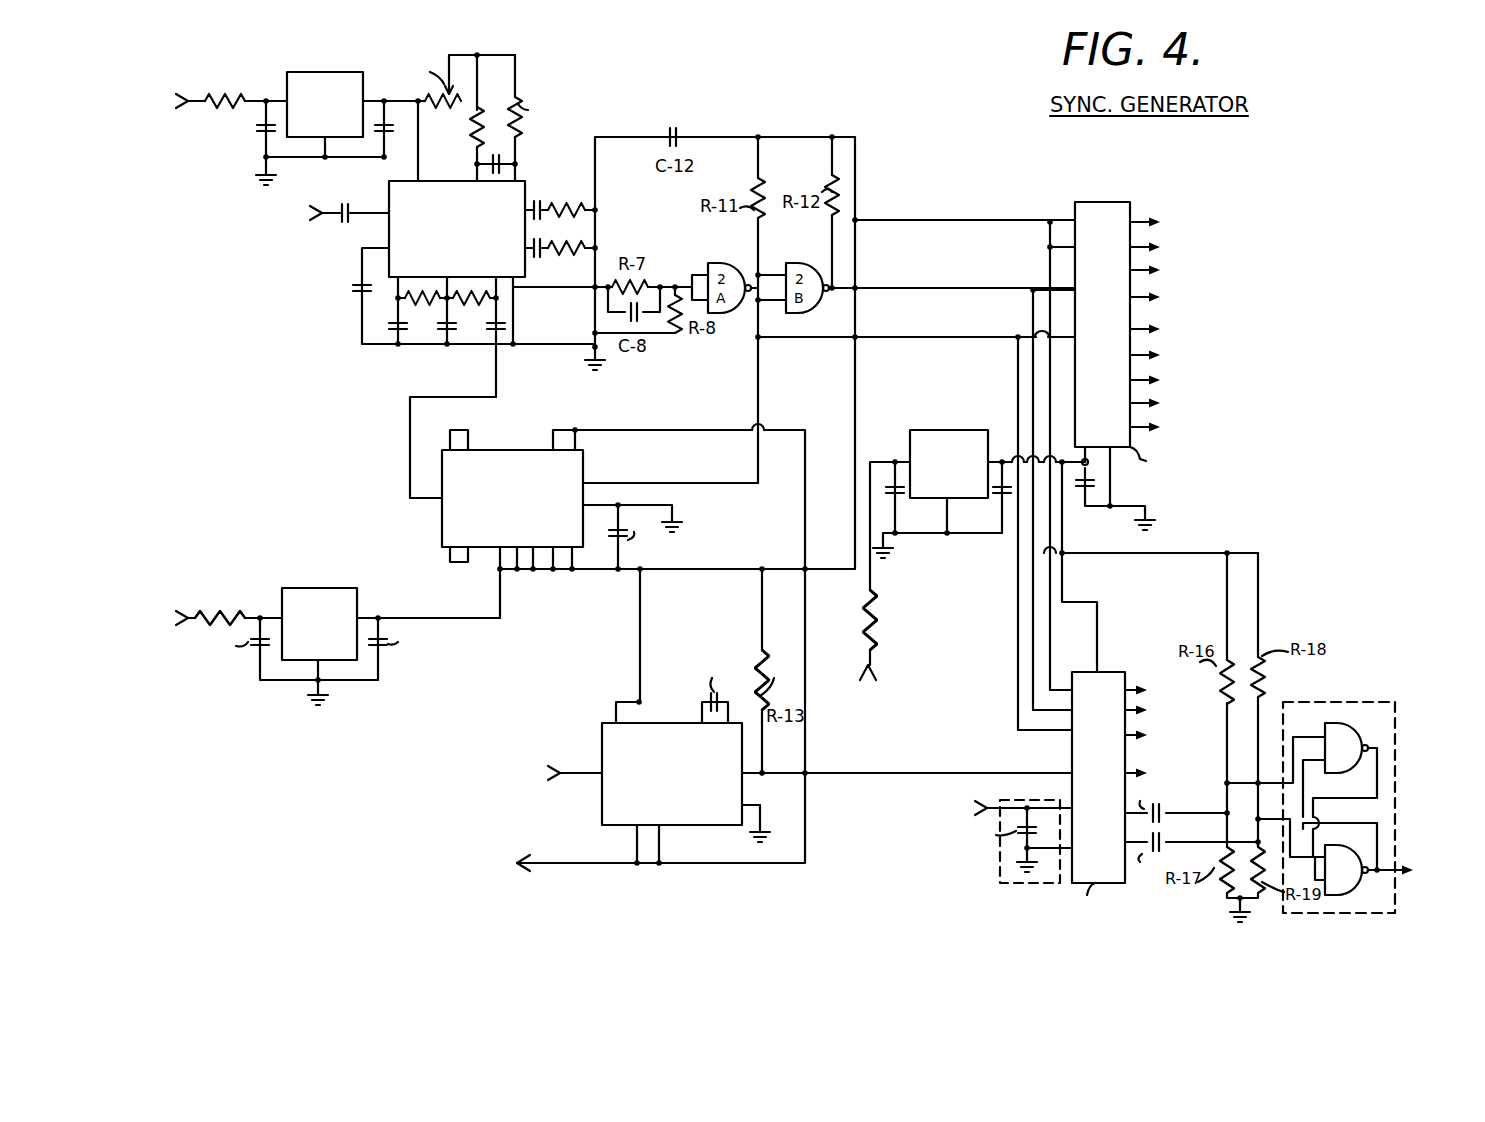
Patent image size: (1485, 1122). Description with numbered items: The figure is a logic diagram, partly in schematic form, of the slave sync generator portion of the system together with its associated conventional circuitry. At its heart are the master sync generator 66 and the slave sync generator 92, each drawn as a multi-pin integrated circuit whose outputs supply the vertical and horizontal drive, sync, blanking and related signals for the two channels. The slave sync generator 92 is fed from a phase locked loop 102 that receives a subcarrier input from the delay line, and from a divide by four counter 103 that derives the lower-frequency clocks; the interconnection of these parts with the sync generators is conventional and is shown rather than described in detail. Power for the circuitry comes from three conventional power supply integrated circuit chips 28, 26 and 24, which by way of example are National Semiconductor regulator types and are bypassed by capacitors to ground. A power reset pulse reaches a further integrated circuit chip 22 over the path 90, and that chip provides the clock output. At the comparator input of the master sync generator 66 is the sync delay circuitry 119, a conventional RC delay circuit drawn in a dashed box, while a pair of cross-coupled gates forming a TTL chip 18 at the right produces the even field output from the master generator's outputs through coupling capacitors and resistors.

The integrated circuit chip 28 is at (330, 72).
The phase locked loop 102 is at (523, 181).
The divide by four counter 103 is at (522, 440).
The slave sync generator 92 is at (1126, 199).
The integrated circuit chip 24 is at (944, 430).
The integrated circuit chip 26 is at (344, 586).
The integrated circuit chip 22 is at (666, 711).
The path 90 is at (566, 765).
The master sync generator 66 is at (1112, 672).
The sync delay circuitry 119 is at (1040, 800).
The integrated circuit TTL chip 18 is at (1395, 708).